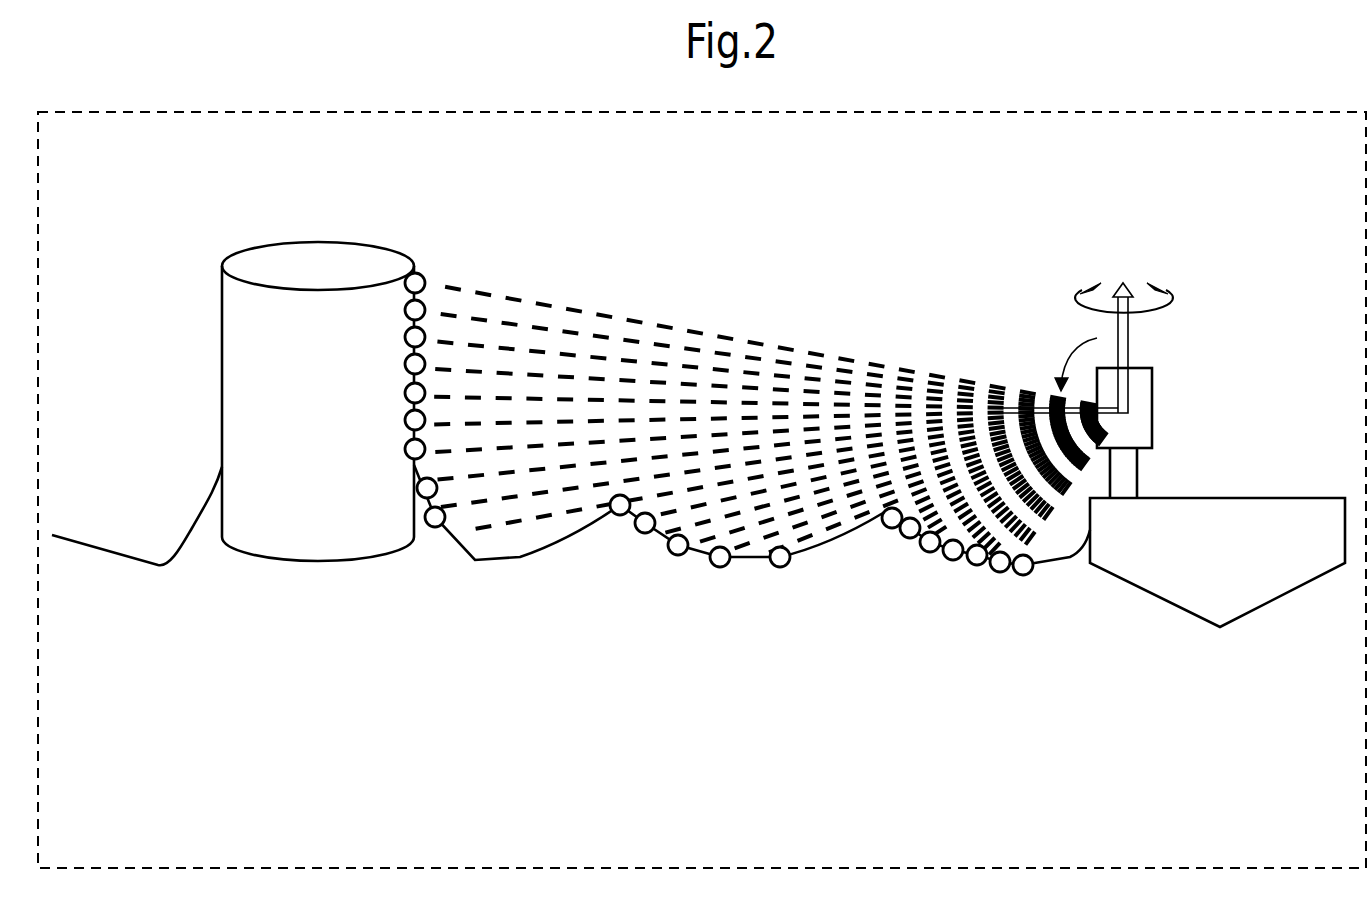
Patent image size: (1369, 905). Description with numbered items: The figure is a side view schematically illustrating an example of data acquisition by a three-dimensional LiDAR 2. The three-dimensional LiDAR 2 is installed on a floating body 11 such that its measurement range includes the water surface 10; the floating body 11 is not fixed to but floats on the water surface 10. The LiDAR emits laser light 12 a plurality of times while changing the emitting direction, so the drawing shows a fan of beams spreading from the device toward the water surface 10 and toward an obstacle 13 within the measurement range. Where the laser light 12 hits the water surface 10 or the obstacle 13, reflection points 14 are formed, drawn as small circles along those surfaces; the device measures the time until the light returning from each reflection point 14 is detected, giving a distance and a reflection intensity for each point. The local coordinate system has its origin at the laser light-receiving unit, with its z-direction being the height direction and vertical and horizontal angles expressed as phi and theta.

The three-dimensional LiDAR 2 is at (1152, 402).
The water surface 10 is at (520, 557).
The floating body 11 is at (1220, 627).
The laser light 12 is at (832, 362).
The obstacle 13 is at (332, 560).
The reflection point 14 is at (767, 562).